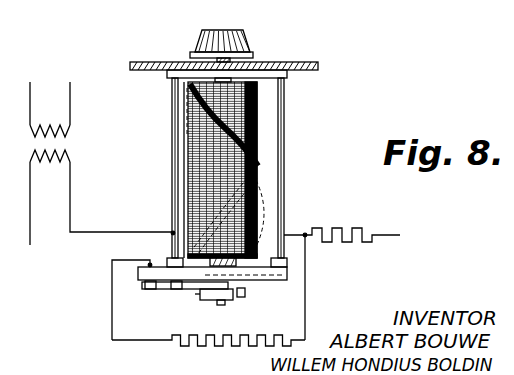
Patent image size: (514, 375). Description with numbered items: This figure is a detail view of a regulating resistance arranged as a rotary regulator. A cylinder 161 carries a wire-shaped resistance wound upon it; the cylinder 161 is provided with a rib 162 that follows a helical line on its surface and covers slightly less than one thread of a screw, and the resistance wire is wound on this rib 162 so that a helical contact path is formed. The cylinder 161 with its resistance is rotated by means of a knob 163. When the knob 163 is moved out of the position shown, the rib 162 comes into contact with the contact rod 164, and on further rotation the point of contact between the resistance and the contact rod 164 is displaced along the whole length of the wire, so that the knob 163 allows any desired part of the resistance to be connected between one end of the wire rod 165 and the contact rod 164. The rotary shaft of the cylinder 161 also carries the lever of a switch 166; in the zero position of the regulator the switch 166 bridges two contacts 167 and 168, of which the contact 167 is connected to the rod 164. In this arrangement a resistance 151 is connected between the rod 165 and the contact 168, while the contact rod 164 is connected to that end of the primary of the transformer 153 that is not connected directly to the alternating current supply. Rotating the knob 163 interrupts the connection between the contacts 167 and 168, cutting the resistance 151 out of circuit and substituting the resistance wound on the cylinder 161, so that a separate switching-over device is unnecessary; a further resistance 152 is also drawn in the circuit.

The resistance 151 is at (192, 348).
The resistor 152 is at (338, 218).
The transformer 153 is at (60, 142).
The cylinder 161 is at (190, 110).
The rib 162 is at (265, 170).
The knob 163 is at (196, 42).
The contact rod 164 is at (171, 200).
The wire rod 165 is at (279, 96).
The switch 166 is at (205, 296).
The contact 167 is at (180, 288).
The contact 168 is at (147, 284).